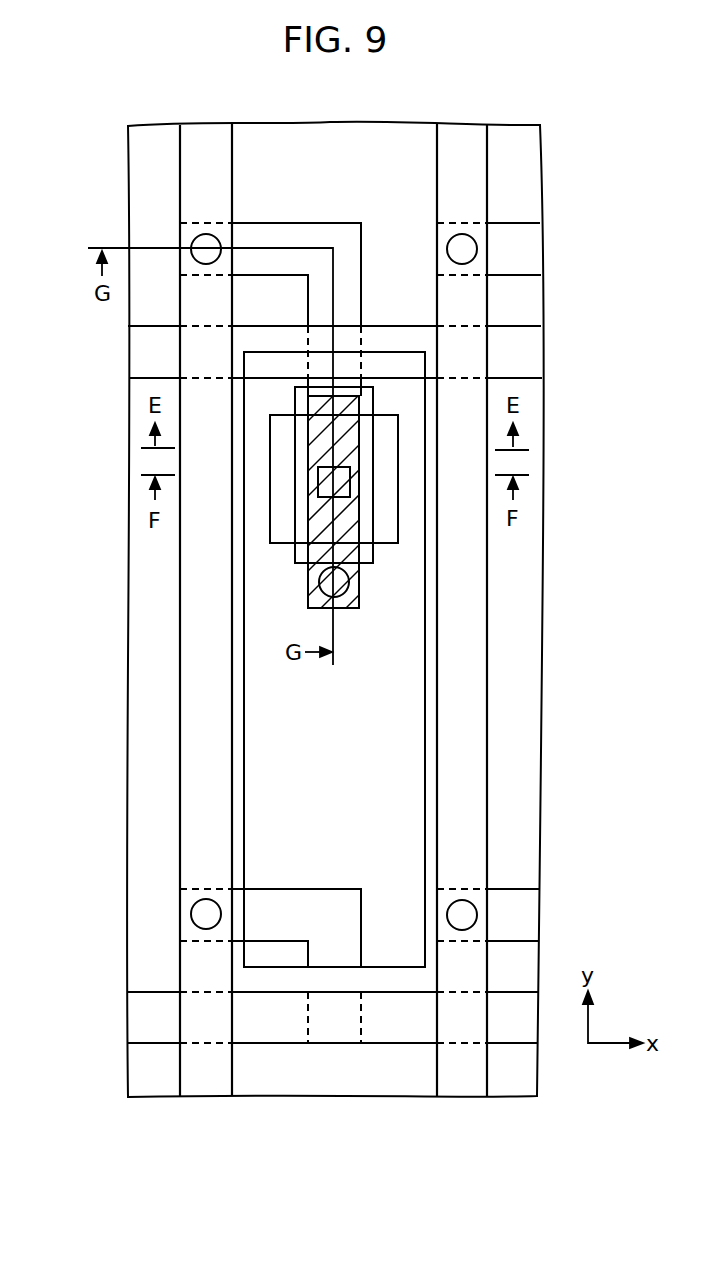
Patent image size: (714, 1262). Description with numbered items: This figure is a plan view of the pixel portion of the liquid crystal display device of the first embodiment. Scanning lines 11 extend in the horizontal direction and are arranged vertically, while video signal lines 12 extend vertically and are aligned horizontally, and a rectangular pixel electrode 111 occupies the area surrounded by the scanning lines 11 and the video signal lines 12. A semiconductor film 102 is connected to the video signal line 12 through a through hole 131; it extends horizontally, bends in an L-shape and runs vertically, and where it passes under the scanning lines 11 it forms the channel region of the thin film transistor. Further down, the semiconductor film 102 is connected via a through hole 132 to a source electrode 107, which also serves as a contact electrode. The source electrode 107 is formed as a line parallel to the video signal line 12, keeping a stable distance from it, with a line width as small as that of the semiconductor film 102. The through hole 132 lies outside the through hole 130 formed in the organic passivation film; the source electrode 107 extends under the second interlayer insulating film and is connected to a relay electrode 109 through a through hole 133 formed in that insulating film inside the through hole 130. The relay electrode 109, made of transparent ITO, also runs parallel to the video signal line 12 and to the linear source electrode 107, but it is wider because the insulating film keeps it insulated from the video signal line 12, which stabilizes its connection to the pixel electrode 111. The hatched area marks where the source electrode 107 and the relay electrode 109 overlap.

The scanning line 11 is at (140, 352).
The video signal line 12 is at (197, 153).
The semiconductor film 102 is at (308, 223).
The source electrode 107 is at (310, 588).
The relay electrode 109 is at (373, 555).
The pixel electrode 111 is at (412, 724).
The through hole 130 is at (282, 544).
The through hole 131 is at (195, 239).
The through hole 132 is at (355, 590).
The through hole 133 is at (358, 452).